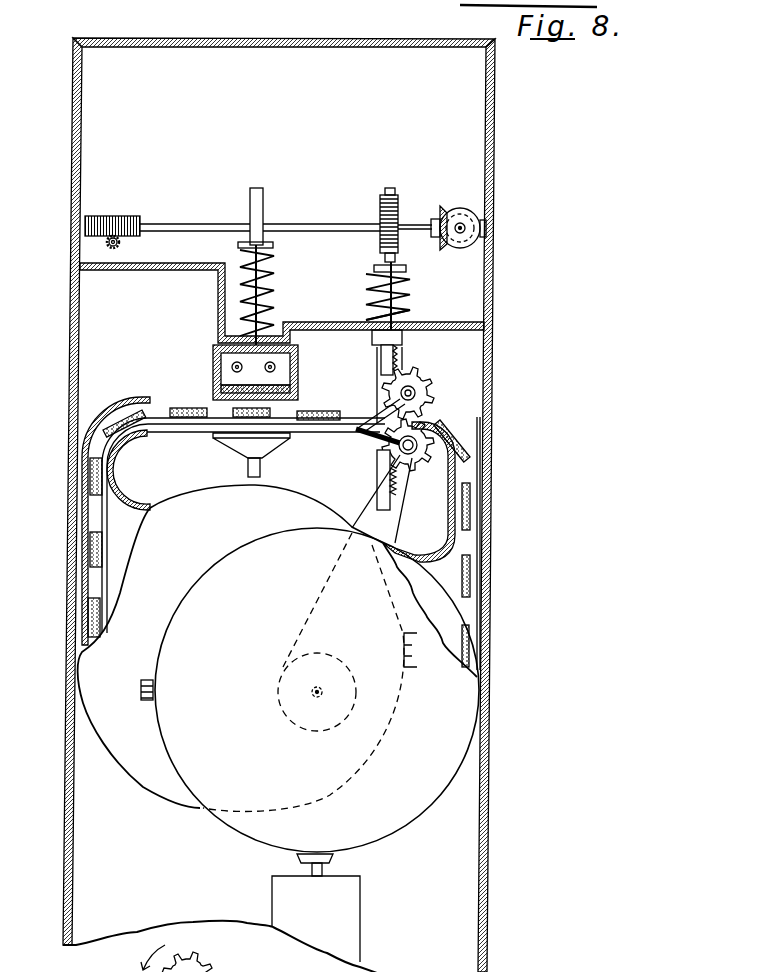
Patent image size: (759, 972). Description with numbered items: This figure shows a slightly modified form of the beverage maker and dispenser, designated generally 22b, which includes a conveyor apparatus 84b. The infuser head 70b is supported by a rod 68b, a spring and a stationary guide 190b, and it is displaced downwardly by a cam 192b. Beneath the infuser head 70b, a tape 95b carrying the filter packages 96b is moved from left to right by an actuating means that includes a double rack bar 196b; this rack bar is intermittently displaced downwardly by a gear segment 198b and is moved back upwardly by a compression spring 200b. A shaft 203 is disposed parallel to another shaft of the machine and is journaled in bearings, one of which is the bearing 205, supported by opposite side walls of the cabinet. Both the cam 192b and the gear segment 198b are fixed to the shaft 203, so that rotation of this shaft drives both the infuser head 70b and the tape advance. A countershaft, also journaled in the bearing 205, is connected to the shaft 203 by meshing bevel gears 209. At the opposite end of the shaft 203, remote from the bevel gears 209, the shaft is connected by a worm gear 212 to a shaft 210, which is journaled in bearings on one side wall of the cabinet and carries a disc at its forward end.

The cam 192b is at (265, 198).
The shaft 203 is at (330, 224).
The gear segment 198b is at (400, 212).
The meshing bevel gears 209 is at (442, 212).
The bearing 205 is at (494, 248).
The worm gear 212 is at (100, 237).
The shaft 210 is at (117, 253).
The rod 68b is at (273, 283).
The double rack bar 196b is at (388, 290).
The compression spring 200b is at (406, 308).
The stationary guide 190b is at (320, 331).
The infuser head 70b is at (206, 367).
The beverage maker and dispenser 22b is at (478, 383).
The tape 95b is at (163, 420).
The filter packages 96b is at (330, 416).
The conveyor apparatus 84b is at (193, 805).